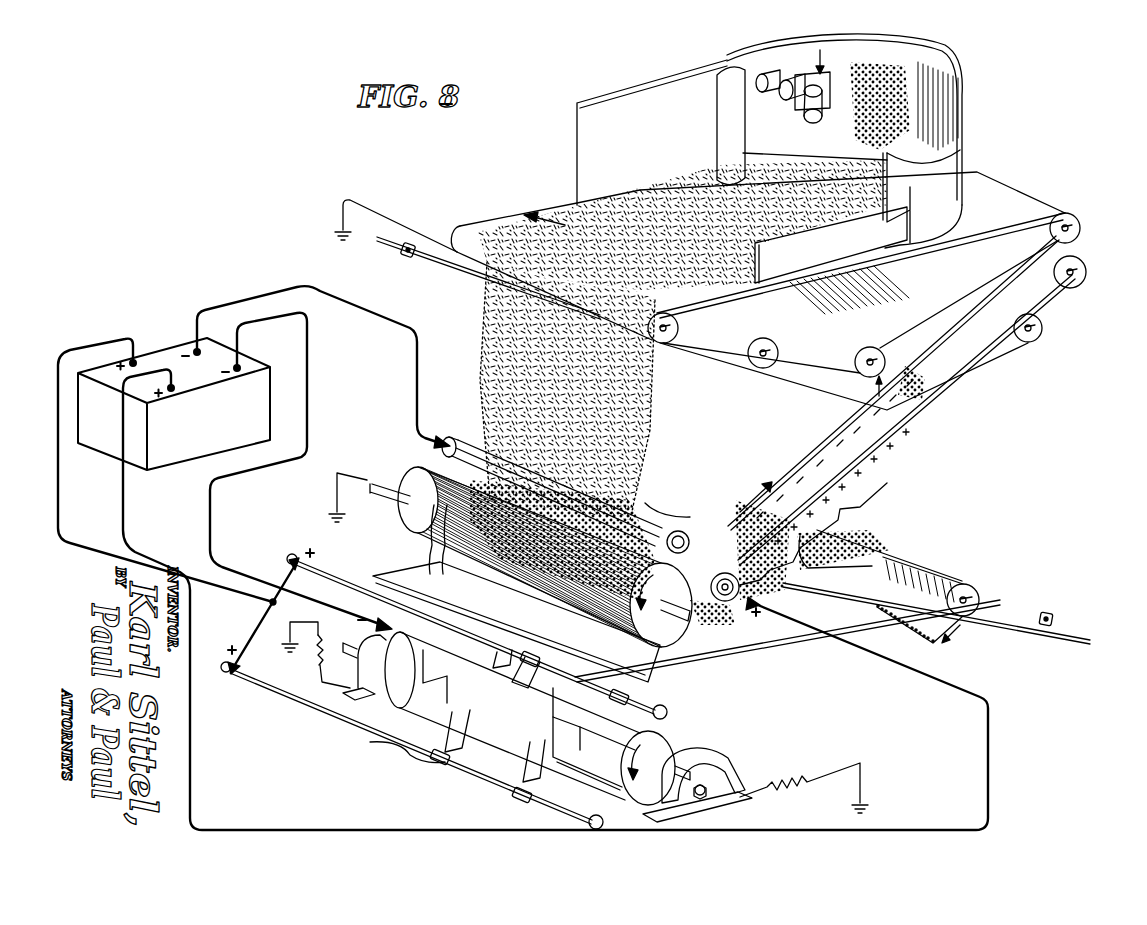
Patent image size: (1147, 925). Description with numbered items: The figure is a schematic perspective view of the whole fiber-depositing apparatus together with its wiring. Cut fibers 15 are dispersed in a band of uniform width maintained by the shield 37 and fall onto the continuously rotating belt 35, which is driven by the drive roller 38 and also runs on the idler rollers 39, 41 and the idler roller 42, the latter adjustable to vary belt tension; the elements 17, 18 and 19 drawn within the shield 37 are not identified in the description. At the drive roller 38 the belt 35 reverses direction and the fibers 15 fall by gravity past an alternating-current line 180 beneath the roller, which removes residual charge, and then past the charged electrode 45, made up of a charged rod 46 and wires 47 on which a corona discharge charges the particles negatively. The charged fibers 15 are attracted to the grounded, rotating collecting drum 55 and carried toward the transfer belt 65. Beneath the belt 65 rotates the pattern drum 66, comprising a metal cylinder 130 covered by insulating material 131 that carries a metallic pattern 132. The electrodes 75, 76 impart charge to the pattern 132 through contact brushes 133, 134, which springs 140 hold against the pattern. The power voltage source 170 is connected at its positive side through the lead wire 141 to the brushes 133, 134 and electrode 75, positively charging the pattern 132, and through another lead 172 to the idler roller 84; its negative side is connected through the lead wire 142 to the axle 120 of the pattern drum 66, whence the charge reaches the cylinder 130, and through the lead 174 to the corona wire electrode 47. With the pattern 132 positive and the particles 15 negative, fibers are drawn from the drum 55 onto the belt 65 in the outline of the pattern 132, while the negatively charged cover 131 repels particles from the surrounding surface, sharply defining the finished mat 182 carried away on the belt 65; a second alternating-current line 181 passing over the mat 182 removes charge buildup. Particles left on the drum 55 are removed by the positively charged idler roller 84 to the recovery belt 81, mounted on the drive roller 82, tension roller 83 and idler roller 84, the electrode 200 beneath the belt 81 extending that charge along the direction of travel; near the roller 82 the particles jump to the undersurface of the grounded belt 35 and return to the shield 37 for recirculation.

The cut fibers 15 is at (847, 82).
The nozzle 17 is at (828, 108).
The nozzle 18 is at (792, 103).
The nozzle 19 is at (760, 100).
The belt 35 is at (500, 224).
The shield 37 is at (940, 99).
The drive roller 38 is at (680, 328).
The idler roller 39 is at (872, 347).
The idler roller 41 is at (1042, 230).
The idler roller 42 is at (755, 362).
The charged electrode 45 is at (670, 499).
The charged rod 46 is at (466, 440).
The corona wire electrode 47 is at (516, 593).
The collecting drum 55 is at (422, 488).
The transfer belt 65 is at (696, 657).
The pattern drum 66 is at (461, 711).
The electrode 75 is at (306, 702).
The electrode 76 is at (353, 588).
The recovery belt 81 is at (960, 372).
The drive roller 82 is at (1072, 288).
The tension roller 83 is at (1022, 342).
The idler roller 84 is at (697, 547).
The axle 120 is at (702, 786).
The cylinder 130 is at (666, 748).
The insulating material 131 is at (593, 773).
The metallic pattern 132 is at (583, 748).
The contact brush 133 is at (470, 728).
The contact brush 134 is at (540, 684).
The springs 140 is at (614, 673).
The lead wire 141 is at (125, 497).
The lead wire 142 is at (309, 413).
The power voltage source 170 is at (160, 350).
The lead 172 is at (192, 752).
The lead 174 is at (278, 295).
The A.C. line 180 is at (420, 258).
The A.C. line 181 is at (1032, 625).
The finished pattern 182 is at (868, 575).
The electrode 200 is at (882, 462).